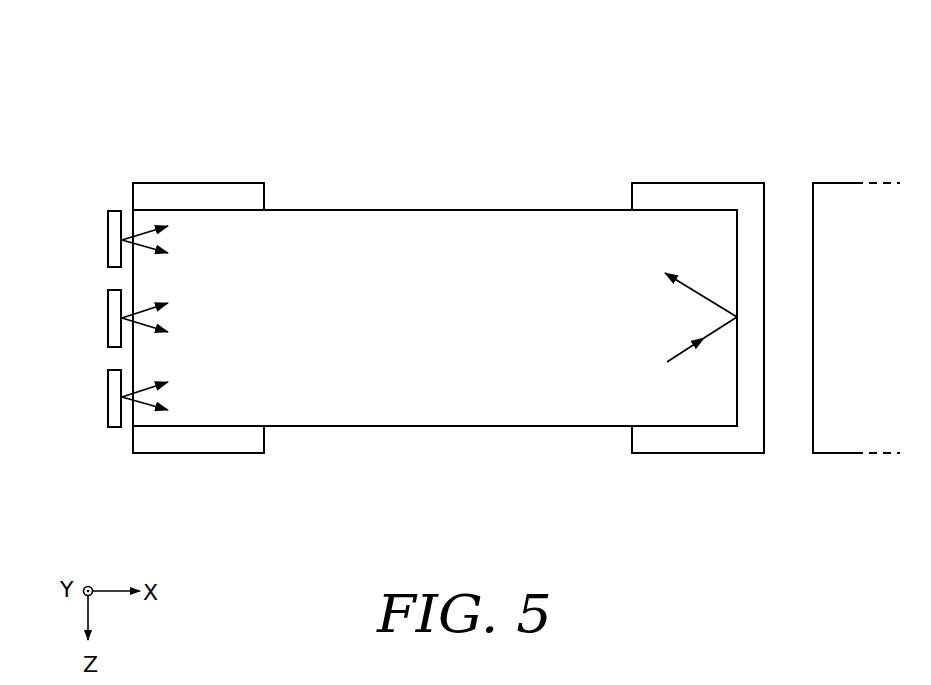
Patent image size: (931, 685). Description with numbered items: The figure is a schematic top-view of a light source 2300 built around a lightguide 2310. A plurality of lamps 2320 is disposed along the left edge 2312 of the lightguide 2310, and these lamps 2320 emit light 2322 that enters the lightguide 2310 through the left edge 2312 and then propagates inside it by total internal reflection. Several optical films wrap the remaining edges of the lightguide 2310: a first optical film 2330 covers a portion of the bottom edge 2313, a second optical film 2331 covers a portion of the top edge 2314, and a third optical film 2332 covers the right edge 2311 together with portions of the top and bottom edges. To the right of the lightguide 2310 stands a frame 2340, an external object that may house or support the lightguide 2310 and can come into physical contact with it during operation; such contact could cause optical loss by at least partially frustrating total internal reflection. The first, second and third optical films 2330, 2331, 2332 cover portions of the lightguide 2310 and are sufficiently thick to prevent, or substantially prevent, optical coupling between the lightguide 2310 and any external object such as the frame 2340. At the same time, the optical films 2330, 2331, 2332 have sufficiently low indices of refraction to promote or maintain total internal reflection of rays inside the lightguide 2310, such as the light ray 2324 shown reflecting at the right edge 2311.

The light source 2300 is at (232, 73).
The lightguide 2310 is at (517, 227).
The right edge 2311 is at (738, 228).
The left edge 2312 is at (131, 424).
The bottom edge 2313 is at (529, 426).
The top edge 2314 is at (376, 210).
The lamps 2320 is at (107, 250).
The light 2322 is at (165, 315).
The light ray 2324 is at (680, 353).
The first optical film 2330 is at (199, 442).
The second optical film 2331 is at (199, 195).
The third optical film 2332 is at (749, 442).
The frame 2340 is at (830, 193).